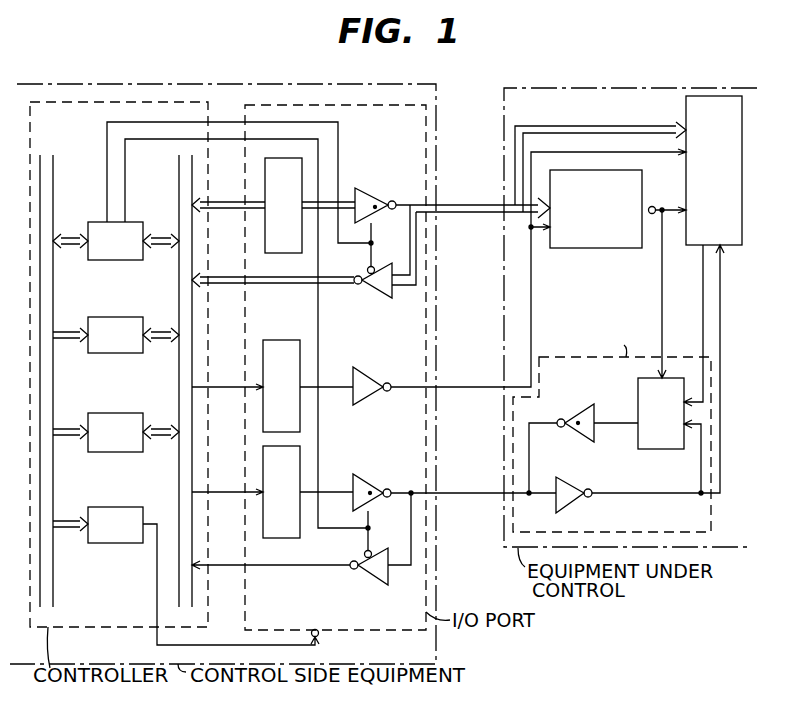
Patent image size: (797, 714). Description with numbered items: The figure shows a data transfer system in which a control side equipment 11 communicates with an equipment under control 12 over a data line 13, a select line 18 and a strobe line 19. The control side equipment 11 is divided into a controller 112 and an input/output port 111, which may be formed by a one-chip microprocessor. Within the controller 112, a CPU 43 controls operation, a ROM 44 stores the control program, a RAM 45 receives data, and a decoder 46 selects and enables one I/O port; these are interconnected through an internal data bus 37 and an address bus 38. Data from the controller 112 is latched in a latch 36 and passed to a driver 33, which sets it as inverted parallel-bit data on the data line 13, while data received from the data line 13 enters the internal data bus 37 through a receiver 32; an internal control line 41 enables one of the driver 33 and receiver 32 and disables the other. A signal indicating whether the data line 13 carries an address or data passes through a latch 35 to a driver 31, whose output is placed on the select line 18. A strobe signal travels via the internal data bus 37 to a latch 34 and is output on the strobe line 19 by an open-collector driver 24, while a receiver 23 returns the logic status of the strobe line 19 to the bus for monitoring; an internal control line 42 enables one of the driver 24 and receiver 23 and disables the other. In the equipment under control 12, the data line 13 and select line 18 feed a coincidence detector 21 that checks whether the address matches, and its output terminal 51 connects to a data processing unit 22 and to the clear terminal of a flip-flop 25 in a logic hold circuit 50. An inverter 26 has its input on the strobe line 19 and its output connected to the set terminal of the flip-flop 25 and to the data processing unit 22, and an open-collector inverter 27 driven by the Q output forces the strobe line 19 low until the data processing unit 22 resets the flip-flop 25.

The control side equipment 11 is at (306, 84).
The equipment under control 12 is at (634, 88).
The data line 13 is at (478, 203).
The select line 18 is at (476, 387).
The strobe line 19 is at (473, 493).
The coincidence detector 21 is at (594, 249).
The data processing unit 22 is at (686, 113).
The receiver 23 is at (371, 551).
The driver 24 is at (375, 468).
The flip-flop 25 is at (638, 405).
The inverter 26 is at (580, 470).
The open-collector type inverter 27 is at (582, 404).
The driver 31 is at (375, 363).
The receiver 32 is at (375, 268).
The driver 33 is at (373, 181).
The latch 34 is at (263, 470).
The latch 35 is at (263, 365).
The latch 36 is at (265, 175).
The internal data bus 37 is at (176, 575).
The address bus 38 is at (53, 572).
The internal control line 41 is at (107, 163).
The internal control line 42 is at (125, 163).
The CPU 43 is at (95, 222).
The ROM 44 is at (95, 317).
The RAM 45 is at (95, 413).
The decoder 46 is at (95, 507).
The logic hold circuit 50 is at (571, 357).
The output terminal 51 is at (653, 206).
The input/output port 111 is at (360, 630).
The controller 112 is at (88, 627).